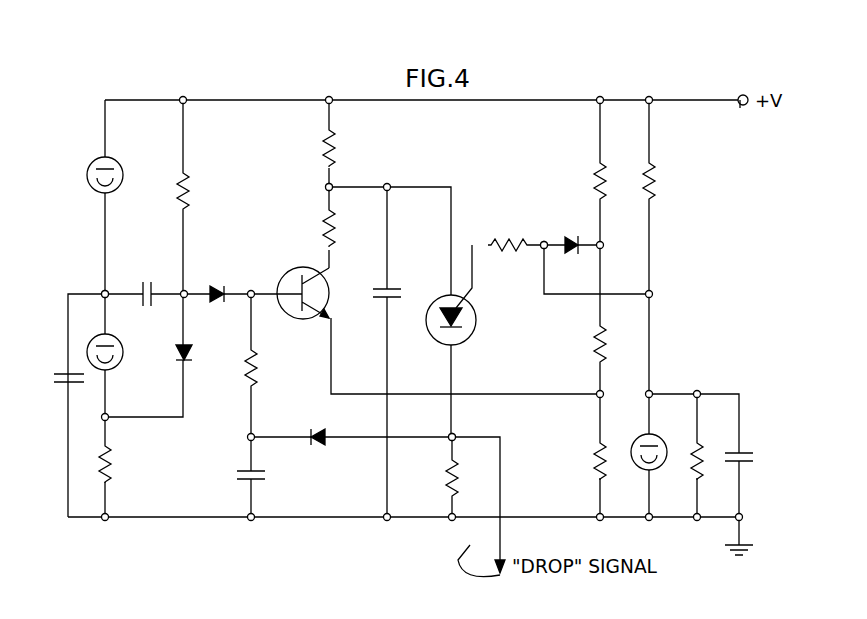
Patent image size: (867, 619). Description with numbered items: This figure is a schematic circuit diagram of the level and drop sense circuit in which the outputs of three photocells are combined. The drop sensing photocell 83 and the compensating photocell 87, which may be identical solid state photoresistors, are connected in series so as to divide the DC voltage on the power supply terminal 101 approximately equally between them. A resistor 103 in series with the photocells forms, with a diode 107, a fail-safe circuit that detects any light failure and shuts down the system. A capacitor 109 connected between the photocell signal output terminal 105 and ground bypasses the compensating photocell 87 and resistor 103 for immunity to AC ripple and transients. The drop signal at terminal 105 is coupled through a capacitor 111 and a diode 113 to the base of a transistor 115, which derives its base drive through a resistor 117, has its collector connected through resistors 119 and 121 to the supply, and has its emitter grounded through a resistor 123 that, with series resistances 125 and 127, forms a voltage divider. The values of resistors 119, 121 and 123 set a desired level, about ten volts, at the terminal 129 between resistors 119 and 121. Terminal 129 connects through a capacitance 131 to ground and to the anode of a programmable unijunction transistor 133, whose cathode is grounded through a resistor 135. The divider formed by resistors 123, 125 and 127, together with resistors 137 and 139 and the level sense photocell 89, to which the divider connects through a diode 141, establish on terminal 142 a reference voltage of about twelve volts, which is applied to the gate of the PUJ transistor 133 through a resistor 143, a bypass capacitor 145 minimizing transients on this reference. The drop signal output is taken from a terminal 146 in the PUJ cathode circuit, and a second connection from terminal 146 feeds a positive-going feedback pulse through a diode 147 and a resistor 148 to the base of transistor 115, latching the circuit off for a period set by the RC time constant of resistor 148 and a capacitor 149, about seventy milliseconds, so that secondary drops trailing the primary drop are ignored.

The drop sensing photocell 83 is at (94, 162).
The compensating photocell 87 is at (123, 358).
The level sense photocell 89 is at (642, 436).
The power supply terminal 101 is at (738, 110).
The resistor 103 is at (118, 465).
The photocell signal output terminal 105 is at (101, 288).
The diode 107 is at (176, 352).
The capacitor 109 is at (54, 375).
The capacitor 111 is at (147, 277).
The diode 113 is at (218, 282).
The transistor 115 is at (293, 272).
The resistor 117 is at (190, 184).
The resistor 119 is at (320, 228).
The resistor 121 is at (320, 141).
The resistor 123 is at (590, 458).
The resistor 125 is at (592, 341).
The resistor 127 is at (590, 176).
The terminal 129 is at (336, 182).
The capacitance 131 is at (370, 292).
The programmable unijunction transistor 133 is at (478, 320).
The resistor 135 is at (445, 470).
The resistor 137 is at (660, 178).
The resistor 139 is at (705, 462).
The diode 141 is at (578, 252).
The terminal 142 is at (544, 239).
The resistor 143 is at (508, 240).
The bypass capacitor 145 is at (755, 458).
The terminal 146 is at (458, 434).
The diode 147 is at (314, 445).
The resistor 148 is at (258, 368).
The capacitor 149 is at (237, 473).